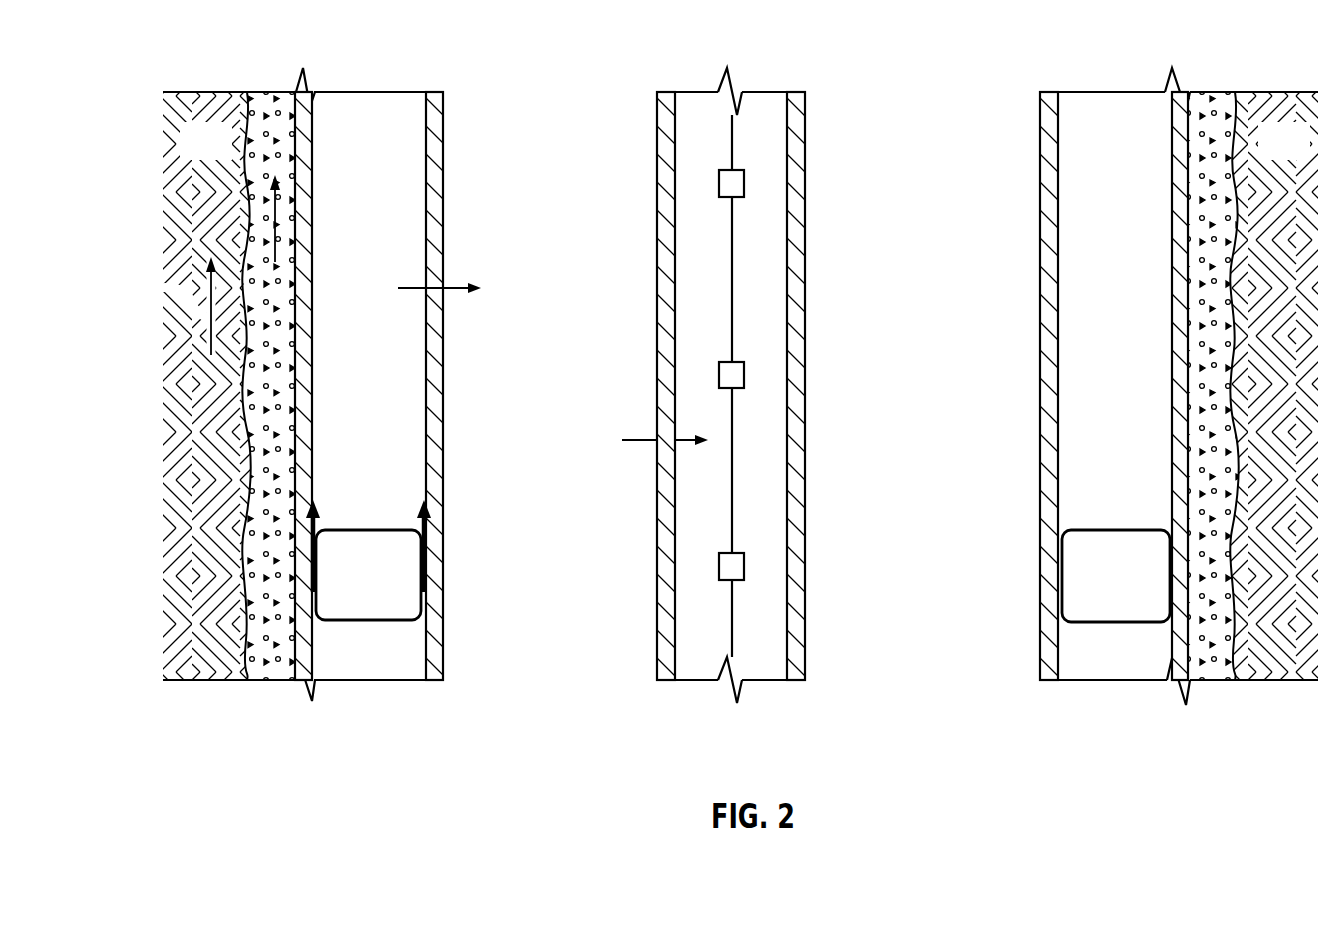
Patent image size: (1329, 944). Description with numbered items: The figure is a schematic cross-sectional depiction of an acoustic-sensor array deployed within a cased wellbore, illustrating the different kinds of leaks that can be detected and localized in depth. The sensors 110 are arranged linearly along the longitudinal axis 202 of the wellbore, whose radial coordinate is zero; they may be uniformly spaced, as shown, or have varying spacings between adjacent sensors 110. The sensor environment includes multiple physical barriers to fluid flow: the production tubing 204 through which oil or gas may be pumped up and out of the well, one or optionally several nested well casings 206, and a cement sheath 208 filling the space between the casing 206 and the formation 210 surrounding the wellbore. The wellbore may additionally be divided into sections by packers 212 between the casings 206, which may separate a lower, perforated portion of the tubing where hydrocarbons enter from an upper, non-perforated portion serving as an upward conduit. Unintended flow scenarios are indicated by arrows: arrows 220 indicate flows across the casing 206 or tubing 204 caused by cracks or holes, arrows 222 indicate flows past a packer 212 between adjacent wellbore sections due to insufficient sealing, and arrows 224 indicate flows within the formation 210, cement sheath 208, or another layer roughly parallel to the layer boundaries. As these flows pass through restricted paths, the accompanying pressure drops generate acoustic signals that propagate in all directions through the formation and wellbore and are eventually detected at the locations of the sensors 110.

The sensors 110 is at (745, 183).
The longitudinal axis 202 is at (733, 452).
The production tubing 204 is at (667, 642).
The well casing 206 is at (302, 426).
The cement sheath 208 is at (285, 360).
The formation 210 is at (183, 155).
The packer 212 is at (378, 620).
The arrows 220 is at (403, 283).
The arrows 222 is at (424, 518).
The arrows 224 is at (277, 217).